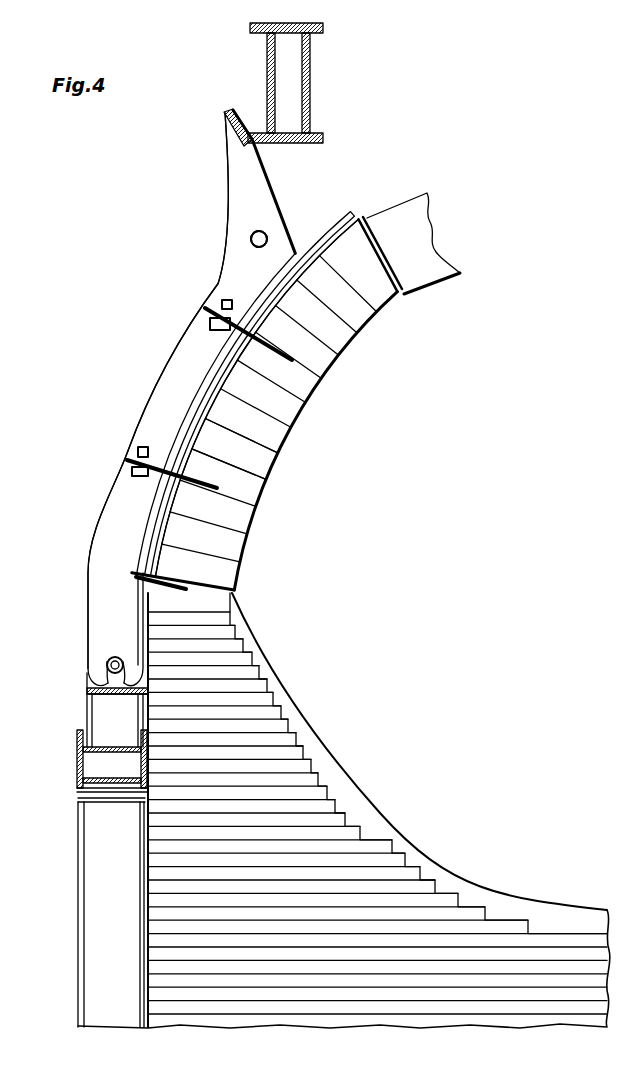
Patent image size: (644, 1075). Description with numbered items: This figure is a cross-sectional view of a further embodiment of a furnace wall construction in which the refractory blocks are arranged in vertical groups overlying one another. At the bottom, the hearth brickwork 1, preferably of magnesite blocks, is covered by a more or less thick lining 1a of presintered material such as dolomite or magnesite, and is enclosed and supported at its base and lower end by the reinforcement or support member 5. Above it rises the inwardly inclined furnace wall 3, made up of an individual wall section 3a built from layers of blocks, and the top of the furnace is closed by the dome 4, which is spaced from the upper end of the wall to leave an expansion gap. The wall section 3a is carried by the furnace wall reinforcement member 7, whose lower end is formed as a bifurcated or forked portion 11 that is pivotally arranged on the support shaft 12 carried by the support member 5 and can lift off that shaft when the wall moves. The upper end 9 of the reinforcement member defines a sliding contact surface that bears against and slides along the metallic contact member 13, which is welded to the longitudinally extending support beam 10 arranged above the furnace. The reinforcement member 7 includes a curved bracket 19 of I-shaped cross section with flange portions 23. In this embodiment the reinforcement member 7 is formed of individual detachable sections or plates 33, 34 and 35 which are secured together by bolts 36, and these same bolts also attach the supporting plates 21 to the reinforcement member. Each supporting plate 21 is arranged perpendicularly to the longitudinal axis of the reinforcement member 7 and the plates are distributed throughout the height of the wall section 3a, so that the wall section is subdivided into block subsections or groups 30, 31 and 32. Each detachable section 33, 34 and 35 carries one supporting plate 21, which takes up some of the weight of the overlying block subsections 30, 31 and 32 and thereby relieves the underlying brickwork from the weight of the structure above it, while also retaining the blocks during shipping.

The hearth brickwork 1 is at (390, 917).
The lining 1a is at (292, 720).
The wall 3 is at (305, 422).
The wall section 3a is at (317, 392).
The dome 4 is at (404, 198).
The support member 5 is at (105, 850).
The furnace wall reinforcement member 7 is at (142, 415).
The upper end 9 is at (240, 186).
The support beam 10 is at (293, 111).
The bifurcated portion 11 is at (110, 681).
The support shaft 12 is at (106, 662).
The contact member 13 is at (229, 111).
The curved bracket 19 is at (347, 212).
The supporting plate 21 is at (287, 353).
The flange portion 23 is at (197, 397).
The subsection 30 is at (366, 323).
The subsection 31 is at (285, 455).
The subsection 32 is at (253, 540).
The detachable section 33 is at (250, 262).
The detachable section 34 is at (193, 350).
The detachable section 35 is at (135, 510).
The bolts 36 is at (215, 310).